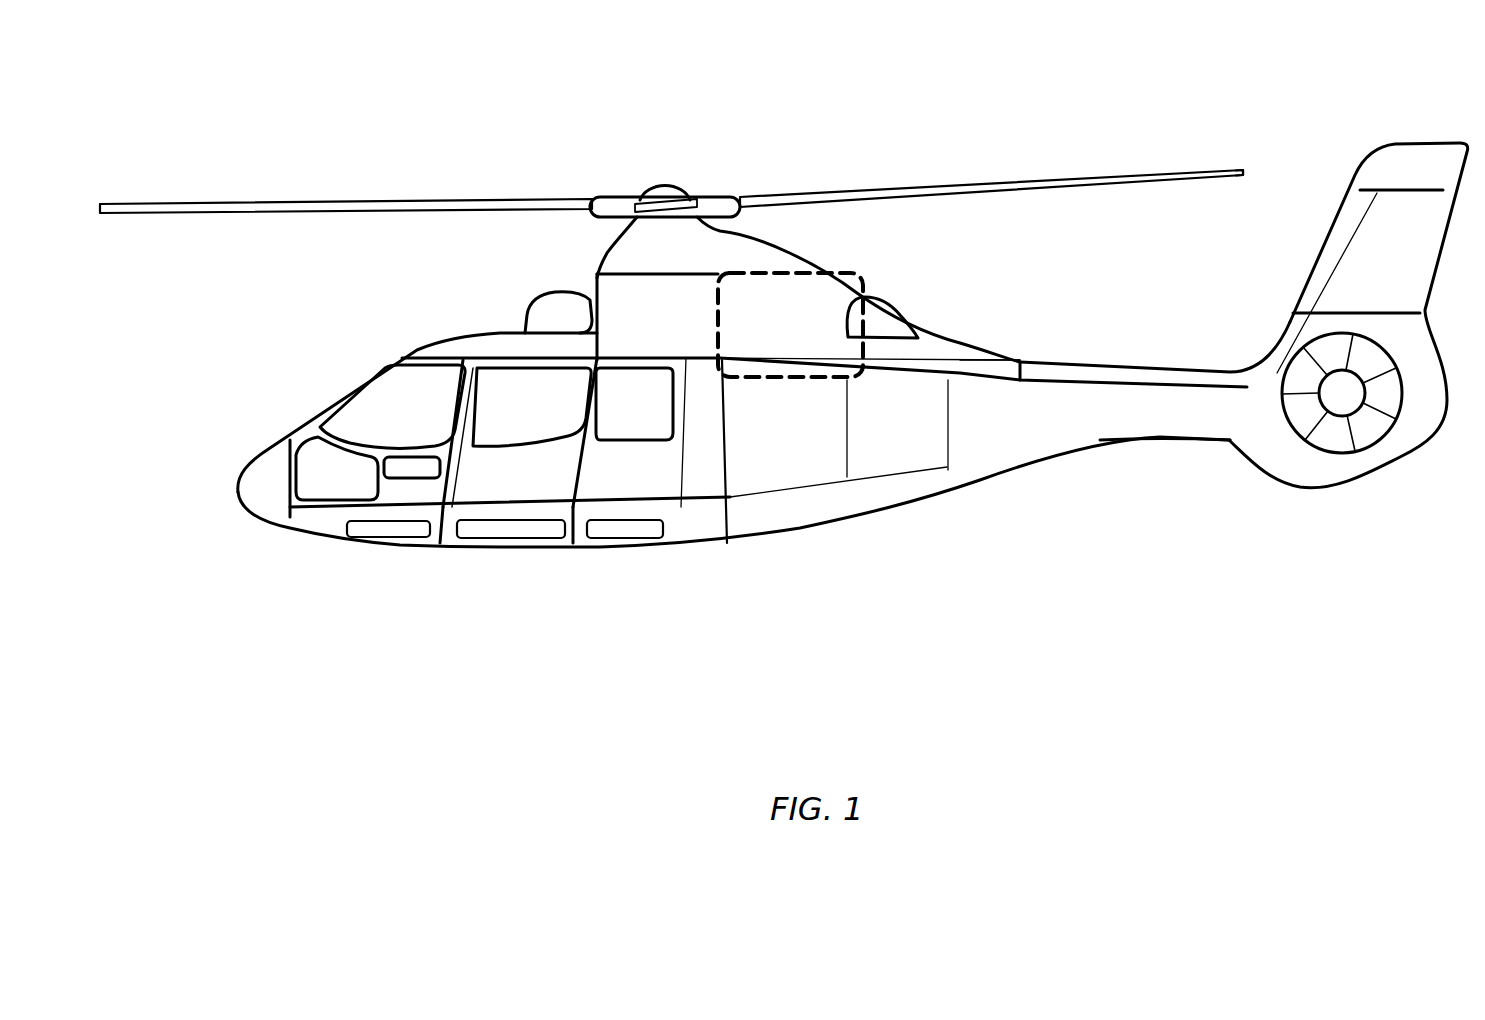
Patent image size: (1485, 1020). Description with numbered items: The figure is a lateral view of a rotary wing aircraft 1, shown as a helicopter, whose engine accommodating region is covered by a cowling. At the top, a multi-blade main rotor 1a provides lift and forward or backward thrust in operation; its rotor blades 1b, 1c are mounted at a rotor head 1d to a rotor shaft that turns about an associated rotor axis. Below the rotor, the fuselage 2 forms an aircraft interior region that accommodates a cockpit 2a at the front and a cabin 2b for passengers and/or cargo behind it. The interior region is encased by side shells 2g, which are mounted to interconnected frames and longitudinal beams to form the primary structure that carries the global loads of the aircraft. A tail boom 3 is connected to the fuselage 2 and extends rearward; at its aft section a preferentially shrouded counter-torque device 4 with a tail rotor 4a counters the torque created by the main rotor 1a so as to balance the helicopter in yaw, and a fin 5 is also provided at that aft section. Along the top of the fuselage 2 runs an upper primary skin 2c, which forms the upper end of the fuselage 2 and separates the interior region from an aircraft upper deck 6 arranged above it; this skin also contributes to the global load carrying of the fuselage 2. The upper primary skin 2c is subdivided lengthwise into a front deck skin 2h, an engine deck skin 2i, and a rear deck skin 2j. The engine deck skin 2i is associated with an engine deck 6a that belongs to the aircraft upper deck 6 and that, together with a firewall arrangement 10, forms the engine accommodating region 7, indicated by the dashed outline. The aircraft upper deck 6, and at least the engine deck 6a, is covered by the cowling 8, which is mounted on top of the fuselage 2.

The rotary wing aircraft 1 is at (365, 110).
The multi-blade main rotor 1a is at (1048, 156).
The rotor blade 1b is at (169, 197).
The rotor blade 1c is at (1226, 165).
The rotor head 1d is at (657, 177).
The fuselage 2 is at (780, 513).
The cockpit 2a is at (388, 412).
The cabin 2b is at (490, 428).
The upper primary skin 2c is at (653, 344).
The side shell 2g is at (830, 460).
The front deck skin 2h is at (684, 348).
The engine deck skin 2i is at (797, 347).
The rear deck skin 2j is at (945, 366).
The tail boom 3 is at (1190, 408).
The counter-torque device 4 is at (1410, 358).
The tail rotor 4a is at (1315, 436).
The fin 5 is at (1425, 160).
The aircraft upper deck 6 is at (605, 345).
The engine deck 6a is at (771, 308).
The engine accommodating region 7 is at (872, 278).
The cowling 8 is at (677, 307).
The firewall arrangement 10 is at (948, 356).